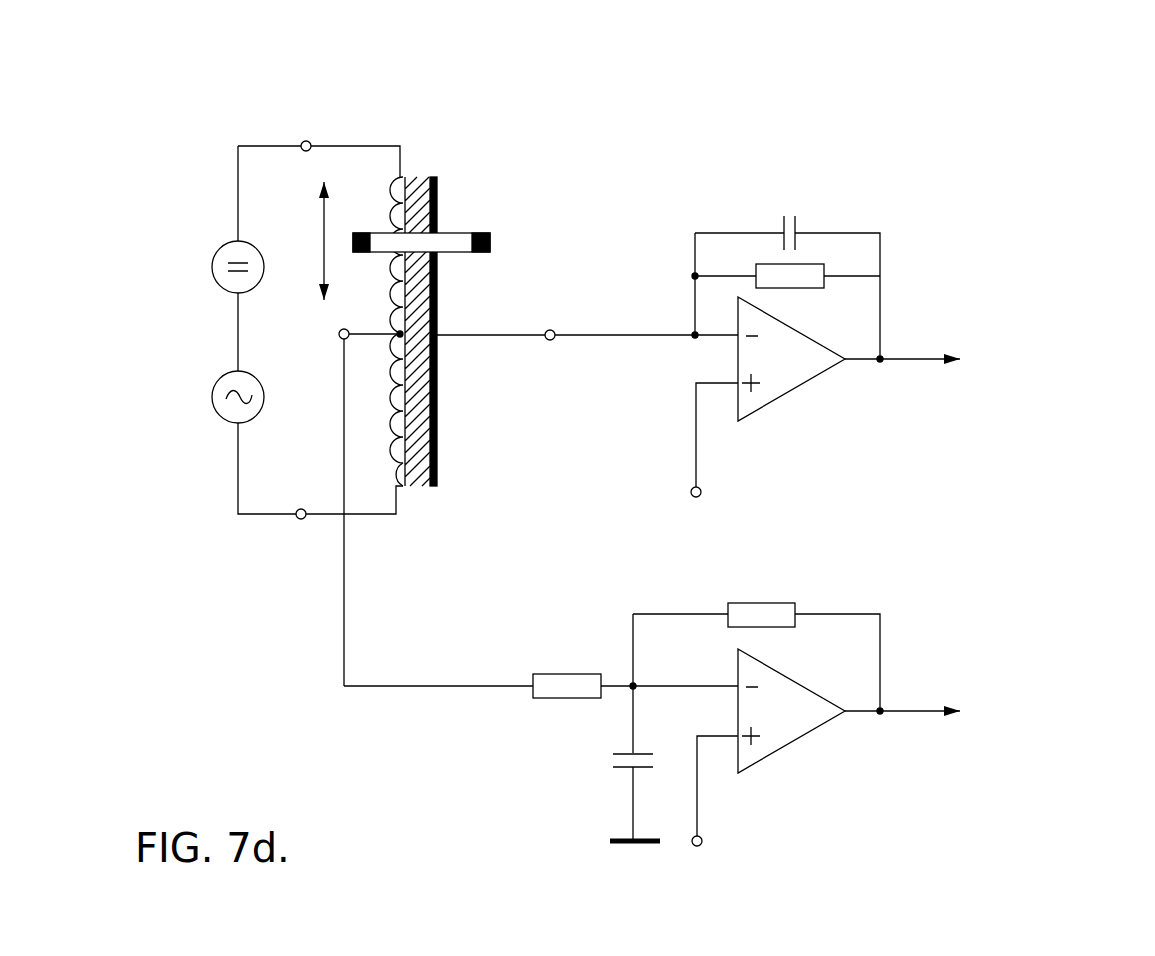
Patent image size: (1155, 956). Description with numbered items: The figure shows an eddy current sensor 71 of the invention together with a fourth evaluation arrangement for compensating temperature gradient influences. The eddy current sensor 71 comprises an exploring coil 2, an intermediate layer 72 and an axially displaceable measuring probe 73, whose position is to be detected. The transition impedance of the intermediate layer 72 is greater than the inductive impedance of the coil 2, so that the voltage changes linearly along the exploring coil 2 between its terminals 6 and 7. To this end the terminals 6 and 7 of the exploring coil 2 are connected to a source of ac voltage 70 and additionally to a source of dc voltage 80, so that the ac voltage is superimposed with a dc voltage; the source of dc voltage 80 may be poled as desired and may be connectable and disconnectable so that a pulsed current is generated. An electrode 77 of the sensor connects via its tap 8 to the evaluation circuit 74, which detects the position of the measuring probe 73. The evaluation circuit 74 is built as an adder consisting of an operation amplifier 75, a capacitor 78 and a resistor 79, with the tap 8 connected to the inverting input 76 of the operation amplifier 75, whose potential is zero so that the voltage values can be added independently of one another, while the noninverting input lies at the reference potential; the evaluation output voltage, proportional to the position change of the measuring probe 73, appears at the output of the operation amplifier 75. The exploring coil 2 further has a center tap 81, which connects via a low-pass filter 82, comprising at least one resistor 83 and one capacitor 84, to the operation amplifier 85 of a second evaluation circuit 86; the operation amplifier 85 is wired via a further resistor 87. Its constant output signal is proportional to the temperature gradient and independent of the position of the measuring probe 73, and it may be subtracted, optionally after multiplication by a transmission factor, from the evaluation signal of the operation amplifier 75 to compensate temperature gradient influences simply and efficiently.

The exploring coil 2 is at (438, 182).
The terminal 6 is at (285, 532).
The terminal 7 is at (294, 129).
The tap 8 is at (549, 357).
The source of ac voltage 70 is at (215, 368).
The eddy current sensor 71 is at (483, 285).
The intermediate layer 72 is at (440, 391).
The measuring probe 73 is at (495, 244).
The evaluation circuit 74 is at (801, 294).
The operation amplifier 75 is at (785, 368).
The inverting input 76 is at (720, 350).
The electrode 77 is at (440, 482).
The capacitor 78 is at (808, 213).
The resistor 79 is at (838, 267).
The source of dc voltage 80 is at (215, 237).
The center tap 81 is at (362, 316).
The low-pass filter 82 is at (502, 716).
The resistor 83 is at (565, 668).
The capacitor 84 is at (610, 773).
The operation amplifier 85 is at (785, 725).
The evaluation circuit 86 is at (703, 714).
The further resistor 87 is at (785, 588).